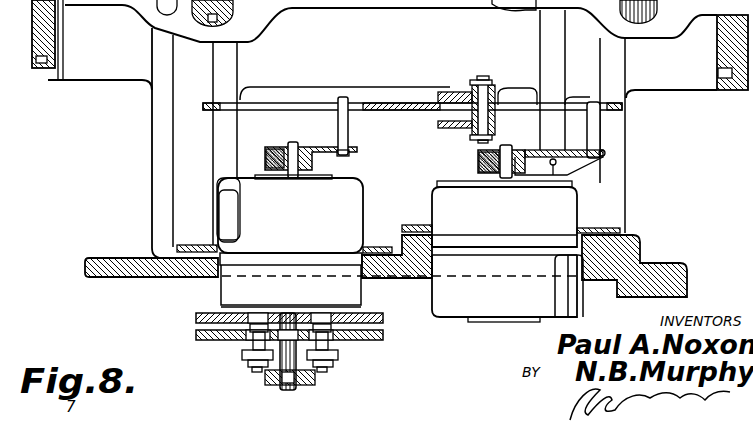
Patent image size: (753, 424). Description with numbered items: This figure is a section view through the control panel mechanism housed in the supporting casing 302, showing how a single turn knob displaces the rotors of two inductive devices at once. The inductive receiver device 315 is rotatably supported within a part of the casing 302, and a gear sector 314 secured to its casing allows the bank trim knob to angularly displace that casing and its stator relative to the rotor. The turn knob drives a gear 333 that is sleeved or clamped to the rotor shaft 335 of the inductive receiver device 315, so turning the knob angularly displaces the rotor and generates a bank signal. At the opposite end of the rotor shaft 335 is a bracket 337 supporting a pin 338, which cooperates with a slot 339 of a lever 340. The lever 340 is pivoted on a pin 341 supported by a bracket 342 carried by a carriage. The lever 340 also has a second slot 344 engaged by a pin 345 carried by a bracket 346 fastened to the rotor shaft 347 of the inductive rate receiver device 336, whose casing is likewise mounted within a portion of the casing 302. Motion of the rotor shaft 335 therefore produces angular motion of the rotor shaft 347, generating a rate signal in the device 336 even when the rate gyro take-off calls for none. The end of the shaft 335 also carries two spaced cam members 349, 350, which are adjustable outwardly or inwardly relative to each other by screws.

The supporting casing 302 is at (165, 155).
The gear sector 314 is at (222, 313).
The inductive receiver device 315 is at (322, 231).
The gear 333 is at (380, 331).
The rotor shaft 335 is at (294, 166).
The inductive rate receiver device 336 is at (525, 221).
The bracket 337 is at (270, 150).
The pin 338 is at (344, 138).
The slot 339 is at (258, 104).
The lever 340 is at (391, 105).
The pin 341 is at (486, 105).
The bracket 342 is at (452, 93).
The second slot 344 is at (622, 107).
The pin 345 is at (593, 129).
The bracket 346 is at (478, 163).
The rotor shaft 347 is at (498, 148).
The cam member 349 is at (254, 343).
The cam member 350 is at (333, 347).